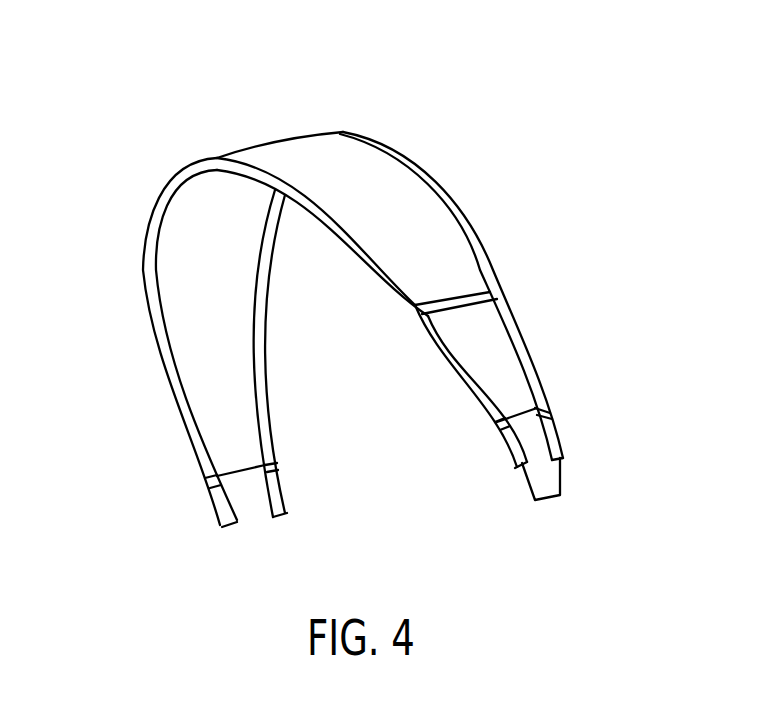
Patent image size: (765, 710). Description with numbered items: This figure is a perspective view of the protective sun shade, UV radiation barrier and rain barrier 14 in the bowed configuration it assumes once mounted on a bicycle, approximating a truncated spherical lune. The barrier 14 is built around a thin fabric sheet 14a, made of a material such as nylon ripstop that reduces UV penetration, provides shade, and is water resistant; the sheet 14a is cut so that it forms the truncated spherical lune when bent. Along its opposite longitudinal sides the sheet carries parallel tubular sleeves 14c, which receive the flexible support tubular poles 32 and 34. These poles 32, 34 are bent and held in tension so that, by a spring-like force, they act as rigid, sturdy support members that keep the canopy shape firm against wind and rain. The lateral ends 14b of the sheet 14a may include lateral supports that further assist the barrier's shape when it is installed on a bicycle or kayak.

The protective barrier 14 is at (262, 97).
The fabric sheet 14a is at (417, 233).
The lateral ends 14b is at (472, 297).
The tubular sleeves 14c is at (143, 297).
The flexible support tubular pole 32 is at (287, 497).
The flexible support tubular pole 34 is at (213, 510).